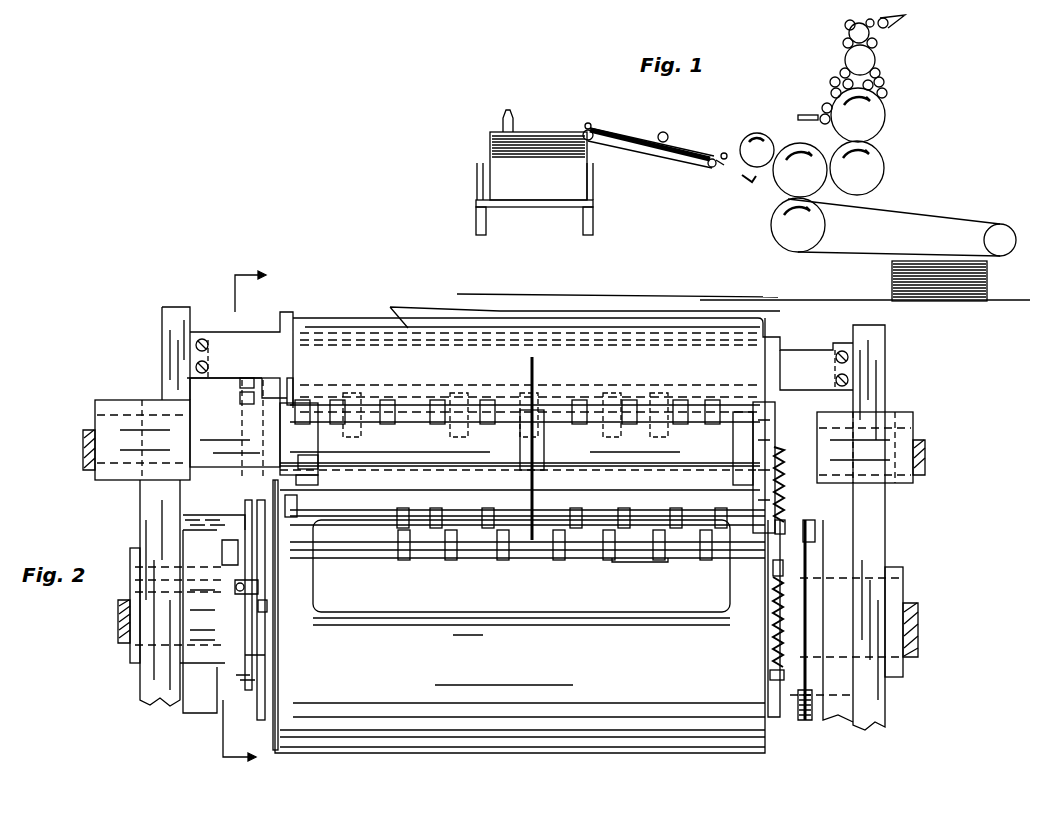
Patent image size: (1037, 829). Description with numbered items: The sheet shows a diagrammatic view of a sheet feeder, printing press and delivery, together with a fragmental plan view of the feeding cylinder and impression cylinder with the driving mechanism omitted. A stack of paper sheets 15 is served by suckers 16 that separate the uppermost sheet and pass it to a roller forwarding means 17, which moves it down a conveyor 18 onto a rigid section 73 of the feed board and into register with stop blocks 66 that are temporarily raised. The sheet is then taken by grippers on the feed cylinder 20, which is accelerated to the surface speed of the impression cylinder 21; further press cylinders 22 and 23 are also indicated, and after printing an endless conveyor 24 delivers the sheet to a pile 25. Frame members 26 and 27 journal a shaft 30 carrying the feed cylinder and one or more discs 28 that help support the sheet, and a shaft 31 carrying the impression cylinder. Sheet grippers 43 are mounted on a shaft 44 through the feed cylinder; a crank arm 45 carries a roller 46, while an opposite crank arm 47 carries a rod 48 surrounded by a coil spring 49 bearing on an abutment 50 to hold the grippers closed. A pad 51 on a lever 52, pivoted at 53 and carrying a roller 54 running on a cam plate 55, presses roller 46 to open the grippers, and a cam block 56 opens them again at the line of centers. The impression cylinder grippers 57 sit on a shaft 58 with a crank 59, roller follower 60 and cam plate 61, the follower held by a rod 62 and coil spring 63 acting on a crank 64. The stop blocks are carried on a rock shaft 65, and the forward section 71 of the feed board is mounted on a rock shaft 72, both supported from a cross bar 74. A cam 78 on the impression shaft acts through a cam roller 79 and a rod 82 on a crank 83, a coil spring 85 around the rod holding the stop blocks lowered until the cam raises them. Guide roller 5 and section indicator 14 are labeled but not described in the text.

In FIG. 1, the guide roller 5 is at (723, 144).
In FIG. 2, the section line 14 is at (265, 288).
In FIG. 1, the stack of paper sheets 15 is at (490, 150).
In FIG. 2, the stack of paper sheets 15 is at (244, 730).
In FIG. 1, the suckers 16 is at (512, 121).
In FIG. 1, the roller forwarding means 17 is at (593, 128).
In FIG. 1, the conveyor 18 is at (676, 160).
In FIG. 1, the feed cylinder 20 is at (757, 136).
In FIG. 1, the impression cylinder 21 is at (818, 136).
In FIG. 2, the impression cylinder 21 is at (767, 748).
In FIG. 1, the cylinder 22 is at (882, 160).
In FIG. 1, the cylinder 23 is at (880, 121).
In FIG. 1, the endless conveyor 24 is at (820, 254).
In FIG. 1, the pile 25 is at (892, 283).
In FIG. 2, the frame member 26 is at (140, 680).
In FIG. 2, the frame member 27 is at (885, 711).
In FIG. 2, the disc 28 is at (535, 381).
In FIG. 2, the shaft 30 is at (925, 443).
In FIG. 2, the shaft 31 is at (905, 592).
In FIG. 2, the sheet grippers 43 is at (628, 521).
In FIG. 2, the shaft 44 is at (580, 520).
In FIG. 2, the crank arm 45 is at (305, 501).
In FIG. 2, the roller 46 is at (298, 483).
In FIG. 2, the crank arm 47 is at (770, 540).
In FIG. 2, the rod 48 is at (786, 509).
In FIG. 2, the coil spring 49 is at (783, 498).
In FIG. 2, the abutment 50 is at (787, 418).
In FIG. 2, the pad 51 is at (240, 600).
In FIG. 2, the lever 52 is at (265, 567).
In FIG. 2, the pivot 53 is at (235, 520).
In FIG. 2, the roller 54 is at (268, 608).
In FIG. 2, the cam plate 55 is at (266, 646).
In FIG. 2, the cam block 56 is at (300, 462).
In FIG. 2, the sheet grippers 57 is at (597, 561).
In FIG. 2, the shaft 58 is at (617, 560).
In FIG. 2, the crank 59 is at (800, 580).
In FIG. 2, the roller follower 60 is at (815, 532).
In FIG. 2, the cam plate 61 is at (806, 638).
In FIG. 2, the rod 62 is at (773, 640).
In FIG. 2, the coil spring 63 is at (773, 656).
In FIG. 2, the crank 64 is at (770, 590).
In FIG. 2, the rock shaft 65 is at (292, 398).
In FIG. 1, the stop blocks 66 is at (751, 180).
In FIG. 1, the forward section 71 is at (714, 170).
In FIG. 2, the forward section 71 is at (530, 380).
In FIG. 2, the rock shaft 72 is at (335, 322).
In FIG. 2, the rigid section 73 is at (415, 306).
In FIG. 2, the cross bar 74 is at (216, 340).
In FIG. 2, the cam 78 is at (240, 656).
In FIG. 2, the cam roller 79 is at (240, 561).
In FIG. 2, the rod 82 is at (240, 405).
In FIG. 2, the crank 83 is at (290, 380).
In FIG. 2, the coil spring 85 is at (240, 393).